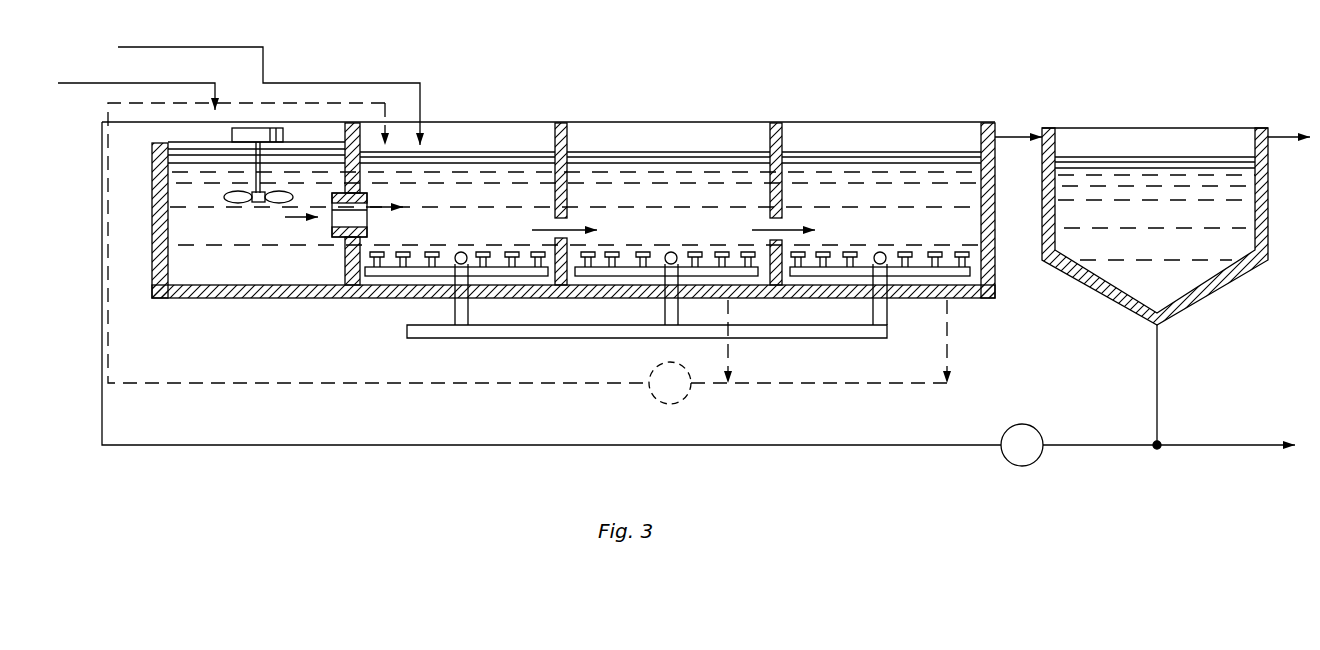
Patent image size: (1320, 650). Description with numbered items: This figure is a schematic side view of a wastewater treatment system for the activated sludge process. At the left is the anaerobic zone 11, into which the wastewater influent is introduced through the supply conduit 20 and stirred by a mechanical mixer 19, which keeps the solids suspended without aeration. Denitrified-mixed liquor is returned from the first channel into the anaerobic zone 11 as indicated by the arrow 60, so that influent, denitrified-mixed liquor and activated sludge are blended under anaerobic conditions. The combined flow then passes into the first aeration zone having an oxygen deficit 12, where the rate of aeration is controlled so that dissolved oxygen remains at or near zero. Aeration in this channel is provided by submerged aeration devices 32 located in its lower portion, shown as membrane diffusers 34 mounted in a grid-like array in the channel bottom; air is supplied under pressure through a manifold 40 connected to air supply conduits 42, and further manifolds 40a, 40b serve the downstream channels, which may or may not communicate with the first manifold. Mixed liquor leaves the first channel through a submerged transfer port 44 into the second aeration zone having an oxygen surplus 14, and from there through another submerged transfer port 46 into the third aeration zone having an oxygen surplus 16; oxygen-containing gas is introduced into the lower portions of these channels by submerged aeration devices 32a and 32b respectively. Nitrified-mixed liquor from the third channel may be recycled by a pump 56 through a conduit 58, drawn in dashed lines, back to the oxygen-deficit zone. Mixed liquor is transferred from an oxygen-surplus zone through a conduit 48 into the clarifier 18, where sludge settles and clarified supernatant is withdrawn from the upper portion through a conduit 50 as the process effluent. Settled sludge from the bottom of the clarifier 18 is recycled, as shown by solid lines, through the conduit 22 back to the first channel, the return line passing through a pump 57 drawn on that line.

The anaerobic zone 11 is at (318, 140).
The first aeration zone having an oxygen deficit 12 is at (522, 140).
The second aeration zone having an oxygen surplus 14 is at (697, 137).
The third aeration zone having an oxygen surplus 16 is at (912, 138).
The clarifier 18 is at (1165, 133).
The mechanical mixer 19 is at (250, 198).
The supply conduit 20 is at (216, 96).
The conduit 22 is at (862, 447).
The submerged aeration devices 32 is at (468, 230).
The submerged aeration devices 32a is at (720, 248).
The submerged aeration devices 32b is at (946, 248).
The membrane diffusers 34 is at (403, 257).
The manifold 40 is at (464, 256).
The manifold 40a is at (672, 255).
The manifold 40b is at (882, 256).
The air supply conduits 42 is at (428, 278).
The submerged transfer port 44 is at (568, 192).
The submerged transfer port 46 is at (783, 192).
The conduit 48 is at (1012, 130).
The conduit 50 is at (1278, 130).
The pump 56 is at (690, 400).
The sludge return pump 57 is at (1042, 432).
The conduit 58 is at (412, 385).
The arrow 60 is at (327, 218).